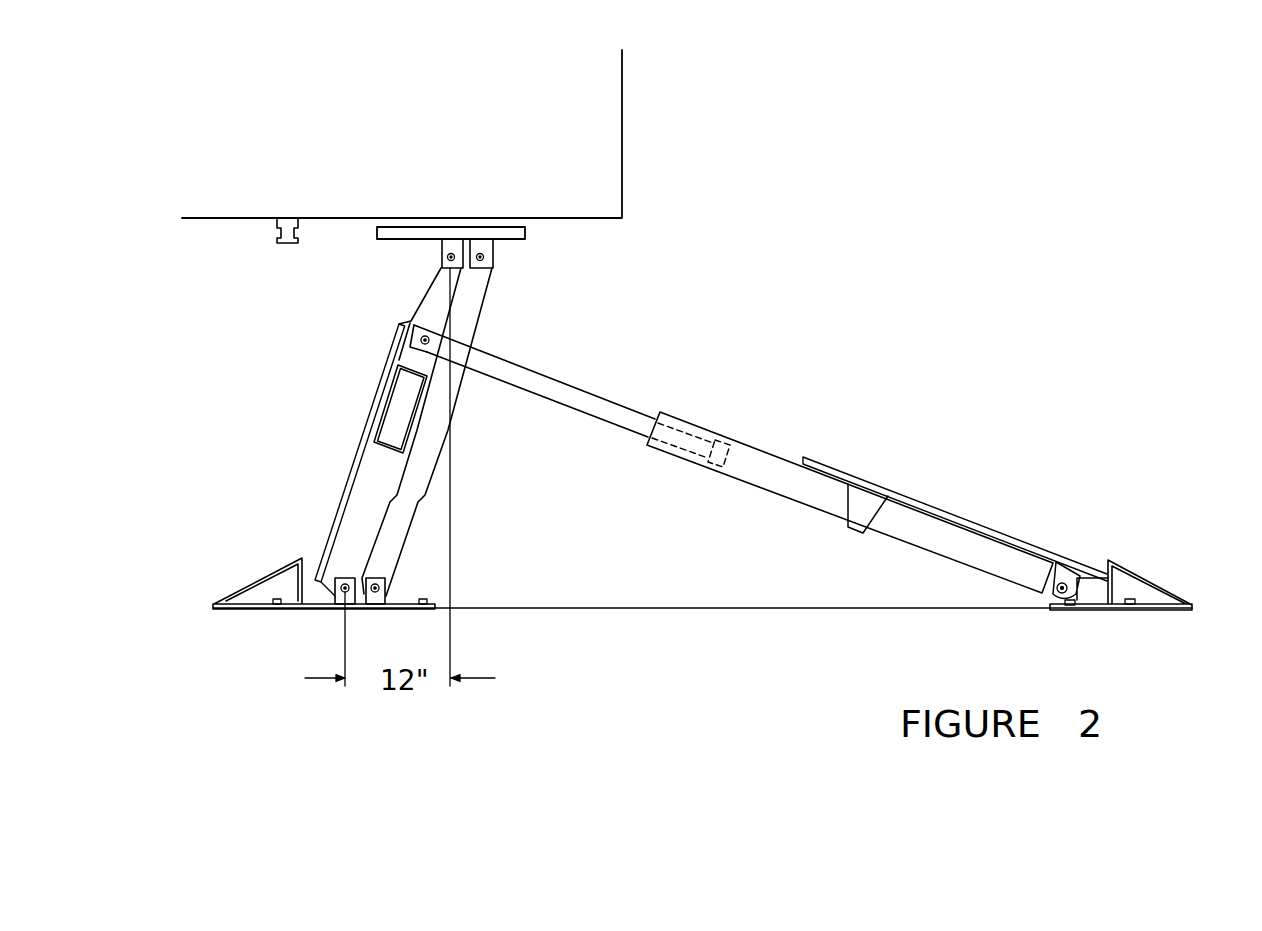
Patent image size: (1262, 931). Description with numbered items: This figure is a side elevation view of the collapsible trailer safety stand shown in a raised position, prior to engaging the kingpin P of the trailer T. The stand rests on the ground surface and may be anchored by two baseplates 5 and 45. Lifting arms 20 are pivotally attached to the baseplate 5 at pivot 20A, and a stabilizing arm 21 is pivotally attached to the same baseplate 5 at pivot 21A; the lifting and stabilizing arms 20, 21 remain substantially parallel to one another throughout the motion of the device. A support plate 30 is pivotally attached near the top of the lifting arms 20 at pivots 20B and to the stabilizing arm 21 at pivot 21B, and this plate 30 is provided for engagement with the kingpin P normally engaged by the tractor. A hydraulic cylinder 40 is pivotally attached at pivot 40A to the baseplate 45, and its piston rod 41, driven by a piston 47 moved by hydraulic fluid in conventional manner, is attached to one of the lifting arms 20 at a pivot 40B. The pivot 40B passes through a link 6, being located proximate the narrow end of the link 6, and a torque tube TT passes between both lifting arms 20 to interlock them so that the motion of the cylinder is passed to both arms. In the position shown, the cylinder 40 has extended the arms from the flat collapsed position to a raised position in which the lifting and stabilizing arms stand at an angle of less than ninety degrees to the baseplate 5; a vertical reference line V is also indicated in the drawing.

The baseplate 5 is at (290, 608).
The link 6 is at (418, 363).
The lifting arms 20 is at (417, 298).
The pivot 20A is at (343, 586).
The pivots 20B is at (448, 258).
The stabilizing arm 21 is at (477, 303).
The pivot 21A is at (381, 584).
The pivot 21B is at (483, 257).
The support plate 30 is at (410, 232).
The hydraulic cylinder 40 is at (765, 473).
The pivot 40A is at (1067, 578).
The pivot 40B is at (421, 340).
The piston rod 41 is at (582, 392).
The baseplate 45 is at (1157, 603).
The piston 47 is at (731, 450).
The trailer T is at (402, 134).
The kingpin P is at (274, 213).
The torque tube TT is at (385, 450).
The vertical reference line V is at (452, 505).